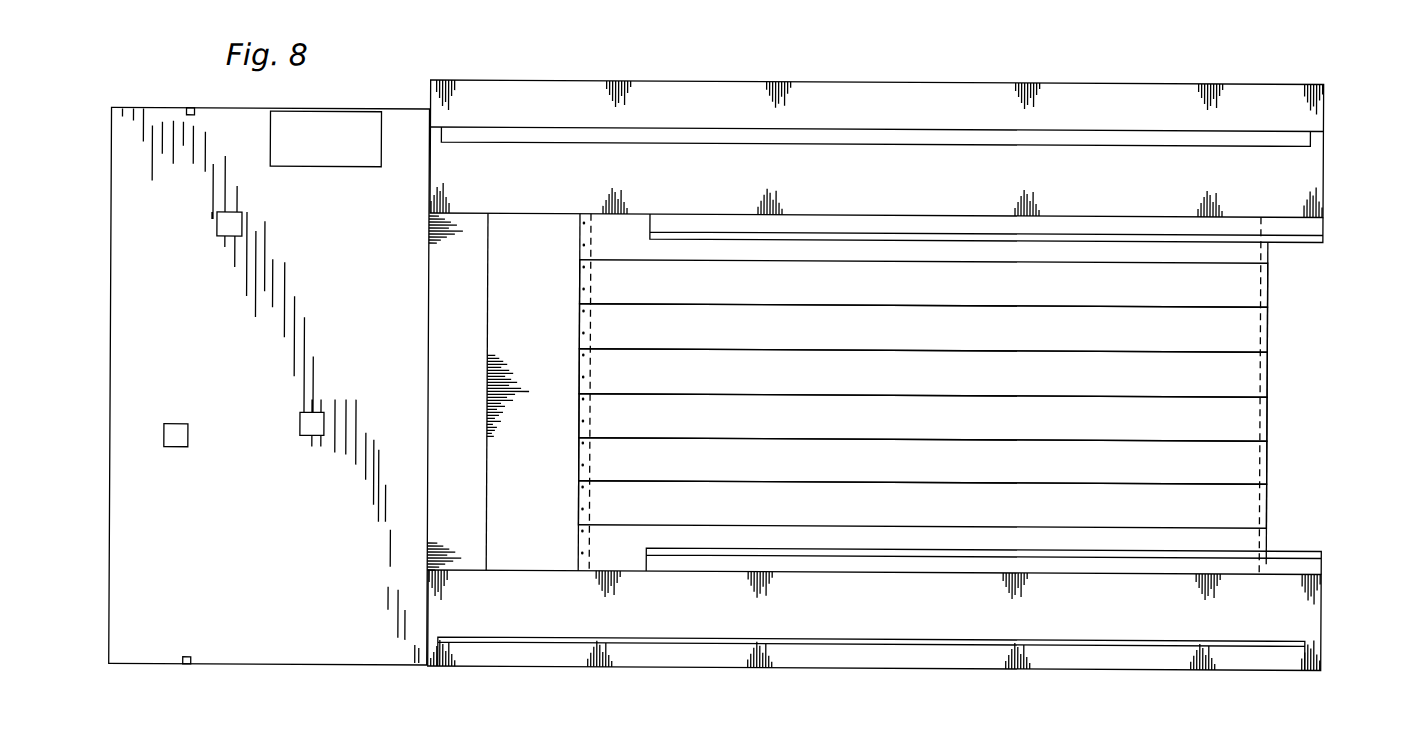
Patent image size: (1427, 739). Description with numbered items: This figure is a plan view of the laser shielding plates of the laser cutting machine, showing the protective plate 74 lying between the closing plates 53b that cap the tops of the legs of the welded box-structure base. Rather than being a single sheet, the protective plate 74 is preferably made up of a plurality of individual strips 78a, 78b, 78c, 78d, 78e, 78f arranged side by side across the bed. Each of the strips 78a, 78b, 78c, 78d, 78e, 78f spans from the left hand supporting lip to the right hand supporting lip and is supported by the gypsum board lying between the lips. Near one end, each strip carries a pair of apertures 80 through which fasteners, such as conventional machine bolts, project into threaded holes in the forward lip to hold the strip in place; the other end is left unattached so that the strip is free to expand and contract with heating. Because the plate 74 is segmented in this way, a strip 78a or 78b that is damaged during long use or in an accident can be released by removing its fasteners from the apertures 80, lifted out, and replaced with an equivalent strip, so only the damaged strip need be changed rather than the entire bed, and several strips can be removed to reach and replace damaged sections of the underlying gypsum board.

The plate 53b is at (1265, 170).
The protective plate 74 is at (1267, 426).
The strip 78a is at (1232, 286).
The strip 78b is at (1230, 331).
The strip 78c is at (1228, 371).
The strip 78d is at (1226, 404).
The strip 78e is at (1232, 466).
The strip 78f is at (1232, 504).
The apertures 80 is at (583, 337).